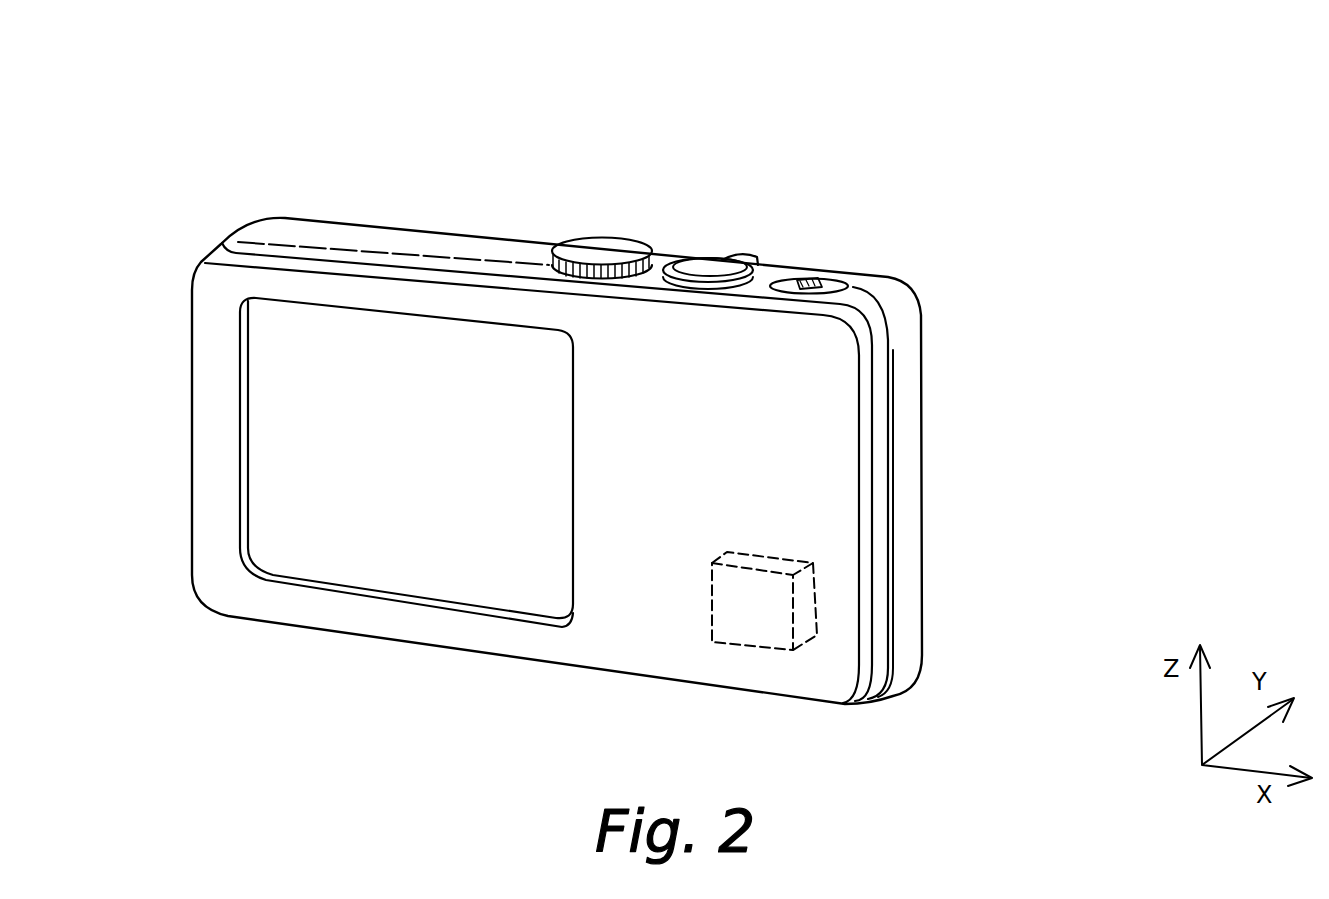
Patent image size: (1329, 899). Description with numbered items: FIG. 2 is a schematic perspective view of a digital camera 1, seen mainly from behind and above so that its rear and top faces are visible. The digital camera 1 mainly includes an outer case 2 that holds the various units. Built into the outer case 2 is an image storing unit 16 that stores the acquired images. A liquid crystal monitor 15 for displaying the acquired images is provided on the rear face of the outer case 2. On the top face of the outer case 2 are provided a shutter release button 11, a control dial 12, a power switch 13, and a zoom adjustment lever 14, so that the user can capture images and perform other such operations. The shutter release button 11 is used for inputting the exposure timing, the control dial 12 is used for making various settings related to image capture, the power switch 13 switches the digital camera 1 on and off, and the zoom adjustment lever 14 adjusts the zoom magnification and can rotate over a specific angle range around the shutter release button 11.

The digital camera 1 is at (1012, 132).
The outer case 2 is at (925, 415).
The shutter release button 11 is at (710, 257).
The control dial 12 is at (595, 245).
The power switch 13 is at (812, 266).
The zoom adjustment lever 14 is at (748, 258).
The liquid crystal monitor 15 is at (288, 418).
The image storing unit 16 is at (766, 616).